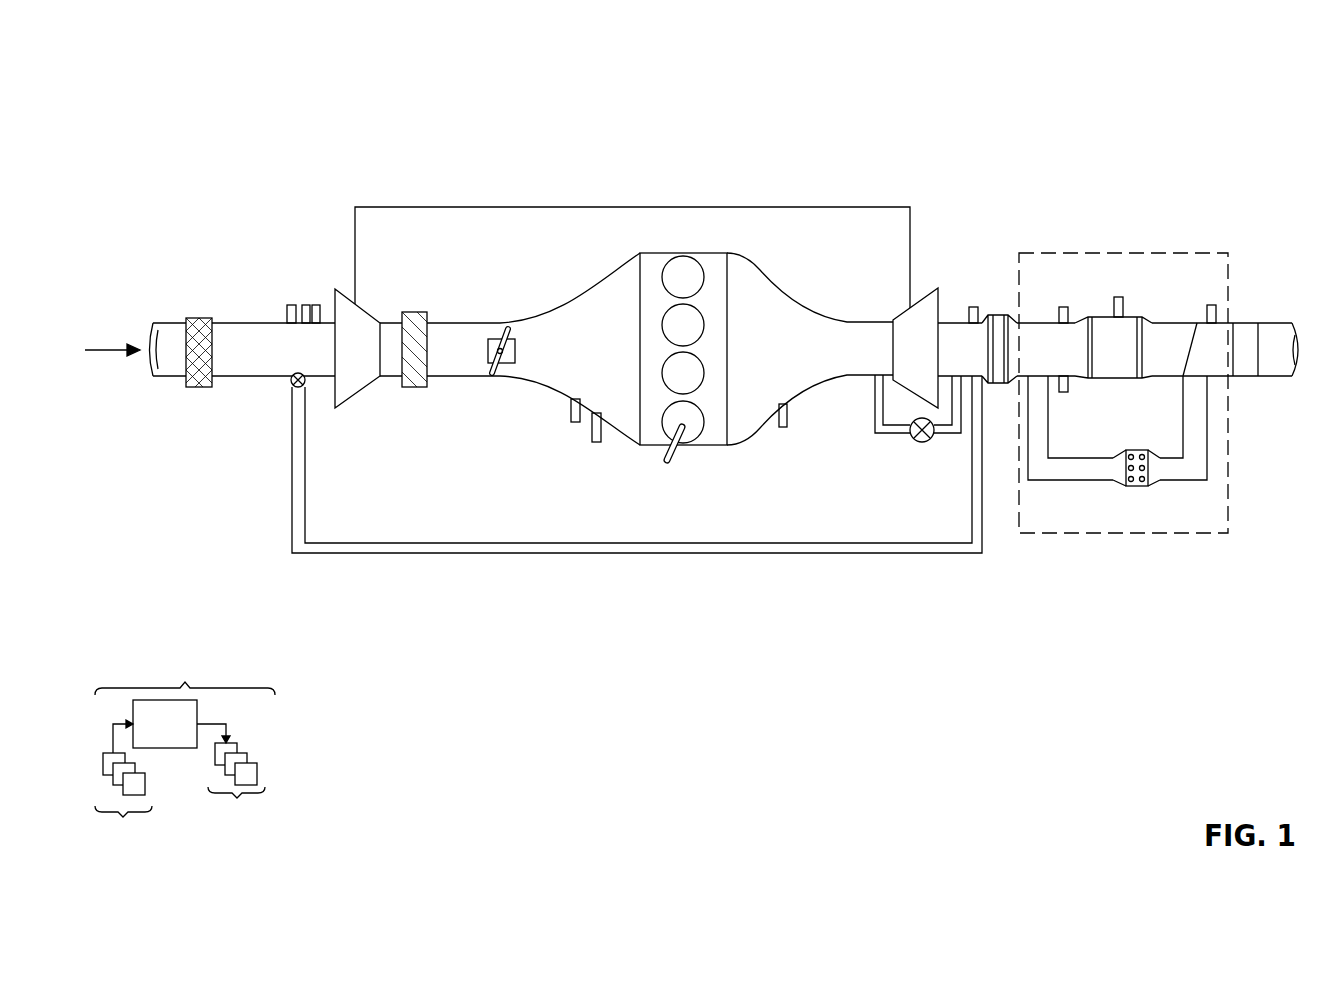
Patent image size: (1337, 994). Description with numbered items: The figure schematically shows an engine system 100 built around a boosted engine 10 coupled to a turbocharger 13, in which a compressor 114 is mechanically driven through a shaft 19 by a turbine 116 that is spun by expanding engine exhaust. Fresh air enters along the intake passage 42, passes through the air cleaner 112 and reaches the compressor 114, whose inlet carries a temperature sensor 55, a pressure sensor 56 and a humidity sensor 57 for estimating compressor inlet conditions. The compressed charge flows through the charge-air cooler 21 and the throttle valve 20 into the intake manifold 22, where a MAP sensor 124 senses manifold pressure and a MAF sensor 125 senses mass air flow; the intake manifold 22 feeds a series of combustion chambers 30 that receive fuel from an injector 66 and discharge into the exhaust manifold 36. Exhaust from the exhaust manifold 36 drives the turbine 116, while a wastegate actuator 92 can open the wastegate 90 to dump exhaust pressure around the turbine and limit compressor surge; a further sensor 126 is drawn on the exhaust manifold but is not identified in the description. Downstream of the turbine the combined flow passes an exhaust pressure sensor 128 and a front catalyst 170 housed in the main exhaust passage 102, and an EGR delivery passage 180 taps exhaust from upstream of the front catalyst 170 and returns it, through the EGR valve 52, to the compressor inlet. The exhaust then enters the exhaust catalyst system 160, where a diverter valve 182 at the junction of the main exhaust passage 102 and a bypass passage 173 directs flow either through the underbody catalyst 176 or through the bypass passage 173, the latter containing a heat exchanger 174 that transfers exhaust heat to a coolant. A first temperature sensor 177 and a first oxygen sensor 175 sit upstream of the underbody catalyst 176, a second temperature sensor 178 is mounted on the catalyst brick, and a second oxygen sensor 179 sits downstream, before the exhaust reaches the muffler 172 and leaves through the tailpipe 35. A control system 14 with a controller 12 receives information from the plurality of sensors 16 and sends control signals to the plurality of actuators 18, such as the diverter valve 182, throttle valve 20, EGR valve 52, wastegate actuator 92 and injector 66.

The engine 10 is at (700, 349).
The controller 12 is at (165, 724).
The turbocharger 13 is at (350, 419).
The control system 14 is at (186, 738).
The sensors 16 is at (127, 788).
The actuators 18 is at (237, 787).
The shaft 19 is at (625, 207).
The throttle valve 20 is at (513, 359).
The charge-air cooler 21 is at (412, 312).
The intake manifold 22 is at (510, 349).
The combustion chambers 30 is at (698, 270).
The tailpipe 35 is at (1268, 321).
The exhaust manifold 36 is at (810, 349).
The intake passage 42 is at (170, 378).
The EGR valve 52 is at (288, 382).
The temperature sensor 55 is at (291, 305).
The pressure sensor 56 is at (306, 305).
The humidity sensor 57 is at (316, 305).
The injector 66 is at (680, 448).
The wastegate 90 is at (876, 434).
The wastegate actuator 92 is at (917, 441).
The engine system 100 is at (1042, 133).
The main exhaust passage 102 is at (1027, 323).
The air cleaner 112 is at (198, 316).
The compressor 114 is at (357, 348).
The turbine 116 is at (915, 348).
The manifold air pressure sensor 124 is at (571, 407).
The manifold air flow sensor 125 is at (595, 440).
The sensor 126 is at (788, 412).
The exhaust pressure sensor 128 is at (973, 307).
The exhaust catalyst system 160 is at (1168, 238).
The front catalyst 170 is at (1003, 385).
The muffler 172 is at (1247, 321).
The bypass passage 173 is at (1038, 481).
The heat exchanger 174 is at (1131, 487).
The first oxygen sensor 175 is at (1063, 392).
The underbody catalyst 176 is at (1105, 380).
The first temperature sensor 177 is at (1064, 307).
The second temperature sensor 178 is at (1118, 297).
The second oxygen sensor 179 is at (1211, 305).
The EGR delivery passage 180 is at (498, 543).
The diverter valve 182 is at (1192, 333).